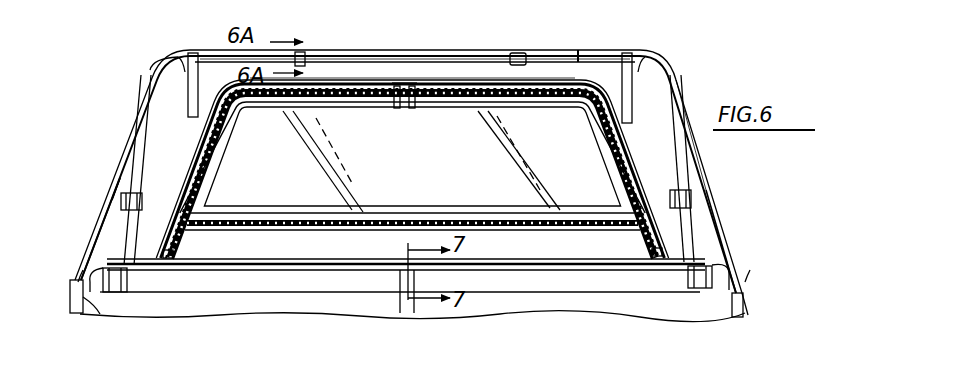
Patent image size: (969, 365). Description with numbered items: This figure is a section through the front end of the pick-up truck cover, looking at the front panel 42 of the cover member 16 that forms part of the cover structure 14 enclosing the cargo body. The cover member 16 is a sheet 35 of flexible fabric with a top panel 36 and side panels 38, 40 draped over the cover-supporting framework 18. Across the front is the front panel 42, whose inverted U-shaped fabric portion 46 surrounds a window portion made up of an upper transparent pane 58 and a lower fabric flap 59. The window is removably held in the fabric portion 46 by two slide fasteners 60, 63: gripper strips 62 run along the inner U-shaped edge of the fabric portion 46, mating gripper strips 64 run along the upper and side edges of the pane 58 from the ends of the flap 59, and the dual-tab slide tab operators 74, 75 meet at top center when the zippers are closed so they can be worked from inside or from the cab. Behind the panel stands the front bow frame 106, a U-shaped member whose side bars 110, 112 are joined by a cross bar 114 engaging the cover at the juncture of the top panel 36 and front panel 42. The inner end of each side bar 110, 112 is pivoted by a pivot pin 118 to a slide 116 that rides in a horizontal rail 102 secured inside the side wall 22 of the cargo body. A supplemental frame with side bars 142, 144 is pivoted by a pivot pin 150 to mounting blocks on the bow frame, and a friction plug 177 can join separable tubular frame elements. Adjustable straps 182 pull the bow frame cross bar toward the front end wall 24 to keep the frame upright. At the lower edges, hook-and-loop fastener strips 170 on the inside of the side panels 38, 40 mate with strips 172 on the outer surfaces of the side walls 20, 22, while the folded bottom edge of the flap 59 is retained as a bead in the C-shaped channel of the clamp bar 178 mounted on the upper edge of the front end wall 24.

The cover structure 14 is at (680, 67).
The cover member 16 is at (591, 47).
The cover-supporting framework 18 is at (700, 219).
The side wall 20 is at (70, 302).
The side wall 22 is at (745, 314).
The front end wall 24 is at (548, 314).
The sheet 35 is at (398, 50).
The top panel 36 is at (376, 364).
The side panel 38 is at (123, 140).
The side panel 40 is at (717, 192).
The front panel 42 is at (353, 77).
The fabric portion 46 is at (152, 60).
The transparent pane 58 is at (470, 171).
The flap 59 is at (294, 255).
The slide fastener 60 is at (212, 84).
The gripper strip 62 is at (196, 148).
The slide fastener 63 is at (600, 77).
The gripper strip 64 is at (174, 249).
The slide tab operator 74 is at (418, 108).
The slide tab operator 75 is at (396, 108).
The horizontal rail 102 is at (108, 284).
The front bow frame 106 is at (445, 57).
The side bar 110 is at (124, 200).
The side bar 112 is at (693, 242).
The cross bar 114 is at (544, 52).
The slide 116 is at (112, 282).
The pivot pin 118 is at (128, 284).
The side bar 142 is at (142, 92).
The side bar 144 is at (685, 159).
The pivot pin 150 is at (117, 182).
The fastener strip 170 is at (78, 280).
The fastener strip 172 is at (85, 303).
The friction plug 177 is at (734, 294).
The clamp bar 178 is at (330, 262).
The strap 182 is at (182, 44).